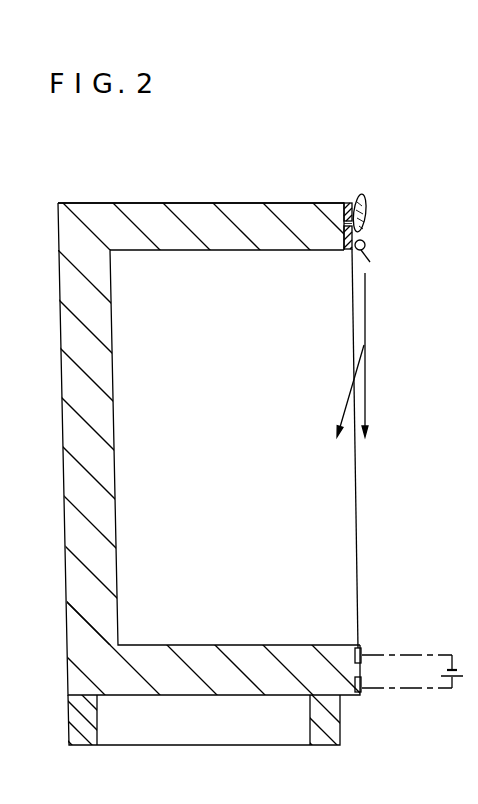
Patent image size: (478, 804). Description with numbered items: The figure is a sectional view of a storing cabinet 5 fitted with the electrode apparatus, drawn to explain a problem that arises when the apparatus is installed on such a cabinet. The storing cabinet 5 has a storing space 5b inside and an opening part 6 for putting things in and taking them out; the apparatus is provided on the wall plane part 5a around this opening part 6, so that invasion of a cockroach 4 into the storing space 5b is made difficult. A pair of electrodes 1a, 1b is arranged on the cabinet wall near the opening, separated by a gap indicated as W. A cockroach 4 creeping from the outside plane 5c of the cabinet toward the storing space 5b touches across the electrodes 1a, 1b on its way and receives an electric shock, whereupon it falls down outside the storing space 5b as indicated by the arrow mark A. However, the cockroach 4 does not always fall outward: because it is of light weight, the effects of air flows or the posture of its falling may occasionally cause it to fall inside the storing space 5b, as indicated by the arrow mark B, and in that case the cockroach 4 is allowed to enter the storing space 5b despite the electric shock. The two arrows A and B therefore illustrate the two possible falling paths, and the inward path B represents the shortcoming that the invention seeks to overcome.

The electrode 1a is at (346, 218).
The electrode 1b is at (341, 251).
The gap width W is at (345, 224).
The cockroach 4 is at (366, 215).
The storing cabinet 5 is at (189, 197).
The wall plane part 5a is at (362, 650).
The storing space 5b is at (210, 503).
The outside plane 5c is at (228, 200).
The opening part 6 is at (351, 578).
The arrow mark A is at (366, 404).
The arrow mark B is at (346, 404).